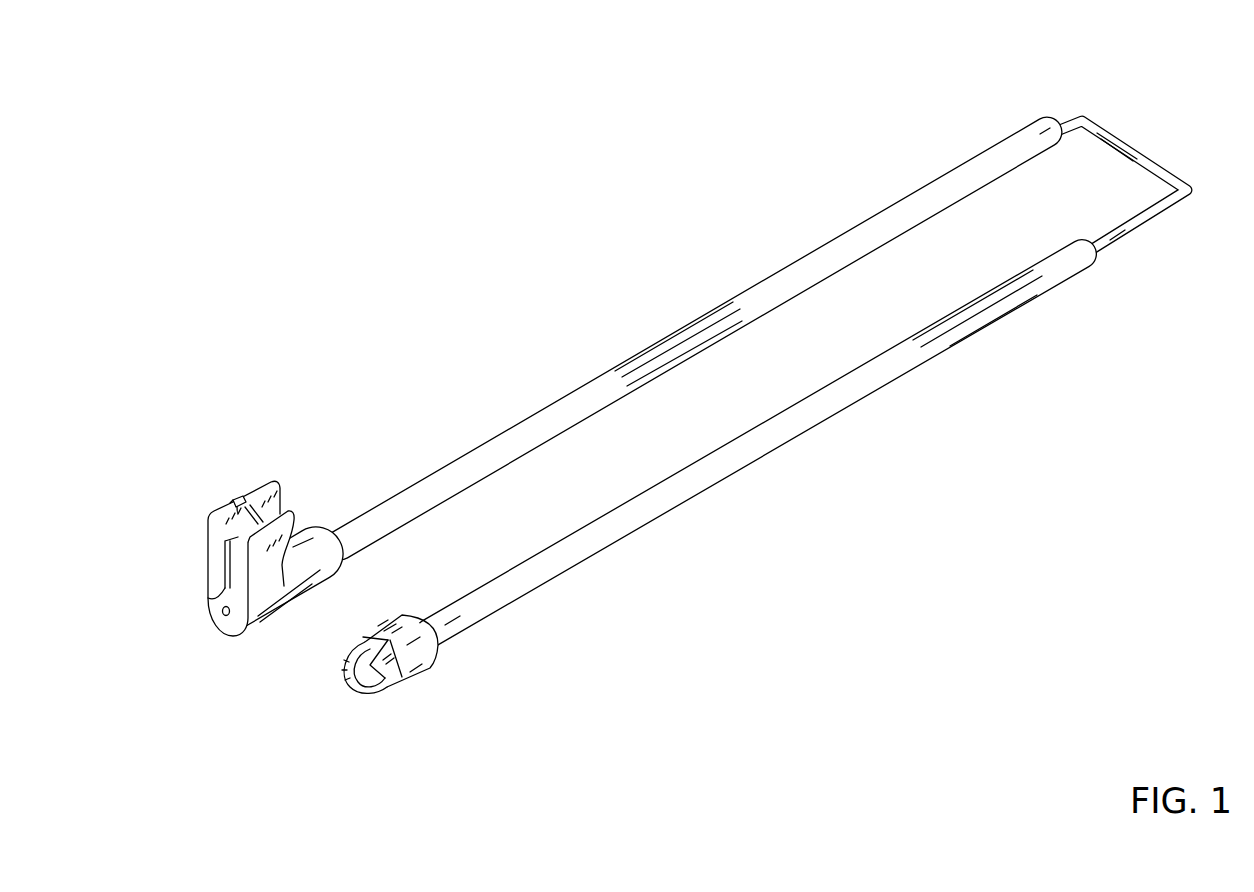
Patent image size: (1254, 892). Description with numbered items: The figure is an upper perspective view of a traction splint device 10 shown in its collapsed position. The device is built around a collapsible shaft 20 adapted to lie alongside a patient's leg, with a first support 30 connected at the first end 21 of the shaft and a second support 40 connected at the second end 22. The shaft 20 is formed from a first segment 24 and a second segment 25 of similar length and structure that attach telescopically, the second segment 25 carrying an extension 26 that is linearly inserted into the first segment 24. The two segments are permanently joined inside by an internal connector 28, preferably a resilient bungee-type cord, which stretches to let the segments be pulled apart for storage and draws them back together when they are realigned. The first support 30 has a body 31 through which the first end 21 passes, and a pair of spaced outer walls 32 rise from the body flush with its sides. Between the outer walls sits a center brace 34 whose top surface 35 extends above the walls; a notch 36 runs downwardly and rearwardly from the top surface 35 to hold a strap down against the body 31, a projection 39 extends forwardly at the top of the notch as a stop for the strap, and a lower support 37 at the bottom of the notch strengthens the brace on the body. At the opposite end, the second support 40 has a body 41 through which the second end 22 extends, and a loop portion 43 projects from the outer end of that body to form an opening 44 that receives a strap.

The traction splint device 10 is at (327, 185).
The collapsible shaft 20 is at (733, 180).
The first end 21 is at (226, 614).
The second end 22 is at (448, 628).
The first segment 24 is at (575, 405).
The second segment 25 is at (740, 452).
The extension 26 is at (1117, 235).
The internal connector 28 is at (1152, 168).
The first support 30 is at (252, 516).
The body 31 is at (237, 633).
The outer walls 32 is at (232, 500).
The center brace 34 is at (265, 480).
The top surface 35 is at (248, 497).
The notch 36 is at (228, 543).
The lower support 37 is at (210, 570).
The projection 39 is at (230, 503).
The second support 40 is at (394, 716).
The body 41 is at (440, 650).
The loop portion 43 is at (353, 688).
The opening 44 is at (383, 686).